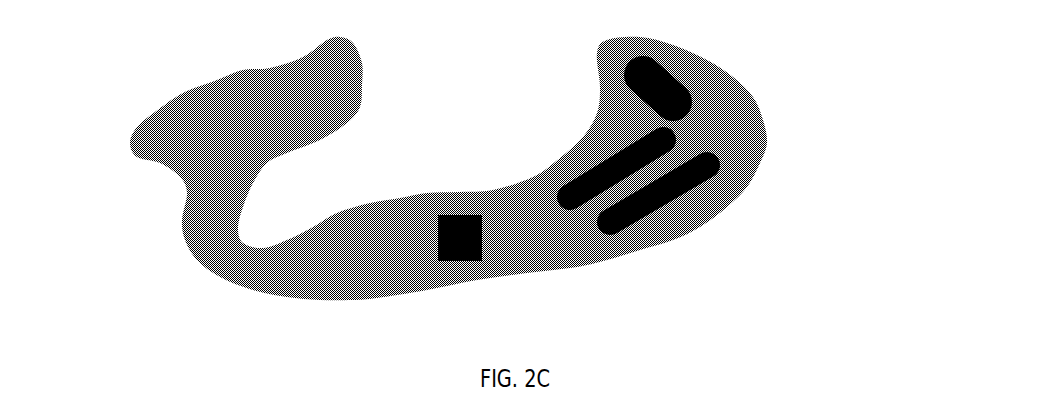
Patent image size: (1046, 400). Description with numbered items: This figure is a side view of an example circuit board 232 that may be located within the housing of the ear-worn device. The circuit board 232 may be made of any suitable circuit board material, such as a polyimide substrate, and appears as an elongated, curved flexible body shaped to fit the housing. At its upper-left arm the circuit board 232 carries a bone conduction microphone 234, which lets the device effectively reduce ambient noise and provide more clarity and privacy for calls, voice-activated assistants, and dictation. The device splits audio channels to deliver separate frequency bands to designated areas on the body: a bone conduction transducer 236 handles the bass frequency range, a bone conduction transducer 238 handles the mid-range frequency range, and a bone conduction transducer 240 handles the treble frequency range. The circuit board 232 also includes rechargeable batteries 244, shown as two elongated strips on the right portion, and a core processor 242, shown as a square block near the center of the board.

The circuit board 232 is at (193, 245).
The bone conduction microphone 234 is at (232, 69).
The bone conduction transducer for a treble frequency range 240 is at (157, 107).
The bone conduction transducer for a bass frequency range 236 is at (683, 90).
The bone conduction transducer for a mid-range frequency range 238 is at (377, 298).
The core processor 242 is at (482, 245).
The rechargeable batteries 244 is at (713, 170).